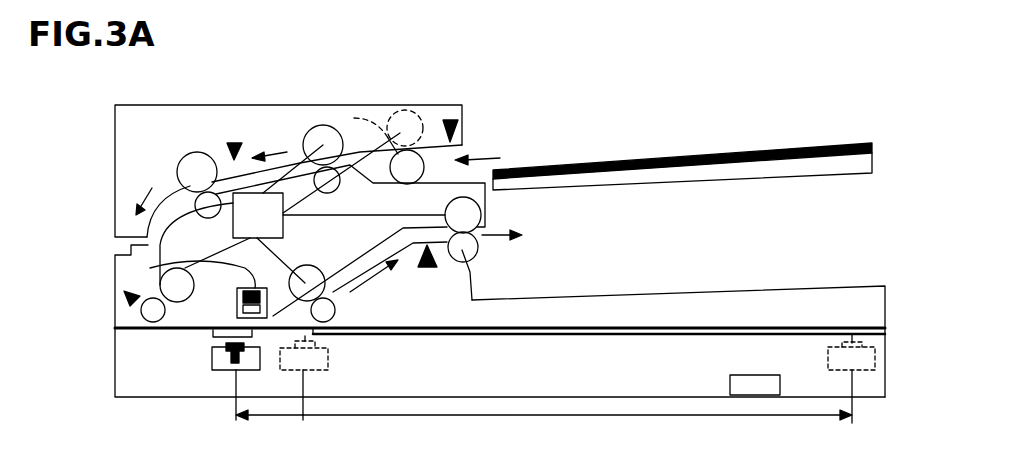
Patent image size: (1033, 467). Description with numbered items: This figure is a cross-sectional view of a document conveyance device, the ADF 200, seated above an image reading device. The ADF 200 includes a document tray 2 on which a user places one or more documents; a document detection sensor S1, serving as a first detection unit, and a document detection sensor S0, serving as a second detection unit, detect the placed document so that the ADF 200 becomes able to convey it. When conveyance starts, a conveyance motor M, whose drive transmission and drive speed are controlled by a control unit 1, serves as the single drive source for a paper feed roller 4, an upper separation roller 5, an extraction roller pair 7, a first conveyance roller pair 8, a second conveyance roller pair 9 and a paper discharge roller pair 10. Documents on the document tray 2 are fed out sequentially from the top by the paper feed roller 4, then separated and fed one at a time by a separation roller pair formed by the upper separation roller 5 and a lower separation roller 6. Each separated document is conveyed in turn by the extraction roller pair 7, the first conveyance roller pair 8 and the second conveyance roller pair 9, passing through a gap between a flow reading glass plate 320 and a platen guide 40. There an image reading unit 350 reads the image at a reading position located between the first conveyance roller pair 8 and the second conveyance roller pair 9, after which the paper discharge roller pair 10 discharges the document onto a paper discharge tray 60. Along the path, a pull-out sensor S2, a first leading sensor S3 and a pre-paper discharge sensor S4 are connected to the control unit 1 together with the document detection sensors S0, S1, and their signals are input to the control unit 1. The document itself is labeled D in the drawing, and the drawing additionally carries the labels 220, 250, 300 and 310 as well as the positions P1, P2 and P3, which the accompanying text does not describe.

The control unit 1 is at (730, 385).
The document tray 2 is at (757, 182).
The paper feed roller 4 is at (380, 146).
The upper separation roller 5 is at (323, 133).
The lower separation roller 6 is at (333, 187).
The extraction roller pair 7 is at (192, 166).
The first conveyance roller pair 8 is at (162, 280).
The second conveyance roller pair 9 is at (310, 270).
The paper discharge roller pair 10 is at (452, 206).
The platen guide 40 is at (236, 313).
The paper discharge tray 60 is at (832, 288).
The ADF 200 is at (115, 130).
The reading unit (reading position) 220 is at (285, 366).
The conveyance guide 250 is at (205, 263).
The image reading apparatus main body 300 is at (888, 373).
The platen glass 310 is at (435, 336).
The flow reading glass plate 320 is at (213, 334).
The image reading unit 350 is at (212, 360).
The conveyance motor M is at (315, 208).
The document D is at (677, 158).
The document detection sensor S0 is at (442, 101).
The document detection sensor S1 is at (450, 118).
The pull-out sensor S2 is at (234, 142).
The first leading sensor S3 is at (123, 302).
The pre-paper discharge sensor S4 is at (427, 269).
The reading position P1 is at (300, 410).
The reading position P2 is at (233, 410).
The reading position P3 is at (851, 392).